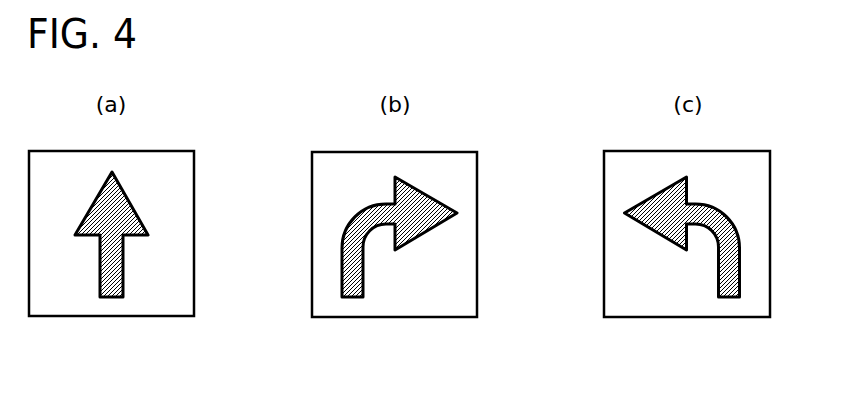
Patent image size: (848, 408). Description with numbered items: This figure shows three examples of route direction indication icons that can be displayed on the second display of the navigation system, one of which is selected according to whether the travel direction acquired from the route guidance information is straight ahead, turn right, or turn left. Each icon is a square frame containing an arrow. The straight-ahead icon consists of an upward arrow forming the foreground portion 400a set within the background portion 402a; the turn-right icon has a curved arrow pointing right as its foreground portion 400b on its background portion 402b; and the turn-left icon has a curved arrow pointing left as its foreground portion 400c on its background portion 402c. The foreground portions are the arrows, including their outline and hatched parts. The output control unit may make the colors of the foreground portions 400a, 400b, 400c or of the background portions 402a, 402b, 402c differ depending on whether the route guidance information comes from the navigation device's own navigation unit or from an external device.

The foreground portion 400a is at (122, 292).
The background portion 402a is at (60, 293).
The foreground portion 400b is at (363, 288).
The background portion 402b is at (435, 280).
The foreground portion 400c is at (738, 293).
The background portion 402c is at (662, 292).